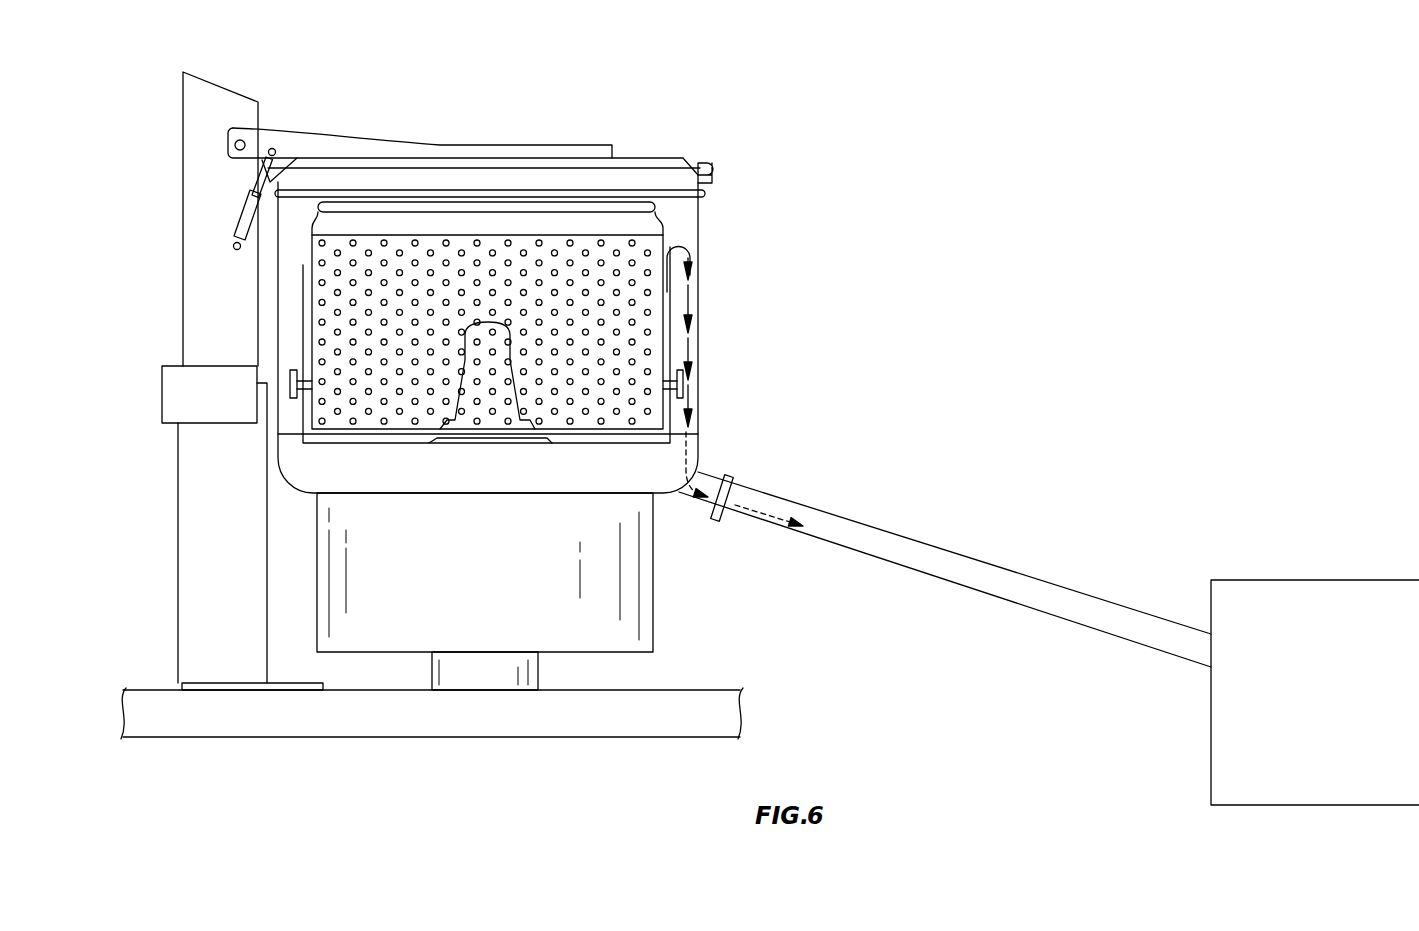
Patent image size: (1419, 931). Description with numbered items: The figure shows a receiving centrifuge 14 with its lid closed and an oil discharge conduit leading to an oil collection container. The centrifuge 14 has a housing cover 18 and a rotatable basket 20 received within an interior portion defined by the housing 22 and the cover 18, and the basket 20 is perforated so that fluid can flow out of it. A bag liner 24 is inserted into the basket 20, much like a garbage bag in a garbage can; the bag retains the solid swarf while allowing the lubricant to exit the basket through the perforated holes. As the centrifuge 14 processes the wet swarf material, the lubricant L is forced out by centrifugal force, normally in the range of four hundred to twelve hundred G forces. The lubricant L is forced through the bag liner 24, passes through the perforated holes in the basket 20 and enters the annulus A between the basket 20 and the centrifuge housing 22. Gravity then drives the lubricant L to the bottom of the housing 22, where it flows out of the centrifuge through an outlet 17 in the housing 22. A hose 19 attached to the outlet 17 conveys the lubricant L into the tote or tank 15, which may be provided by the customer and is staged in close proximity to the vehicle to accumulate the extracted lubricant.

The basket centrifuge 14 is at (707, 592).
The tote or tank 15 is at (1314, 568).
The outlet 17 is at (702, 470).
The housing cover 18 is at (315, 145).
The hose 19 is at (920, 537).
The rotatable basket 20 is at (457, 256).
The centrifuge housing 22 is at (698, 305).
The bag liner 24 is at (632, 242).
The annulus A is at (677, 222).
The lubricant L is at (692, 350).